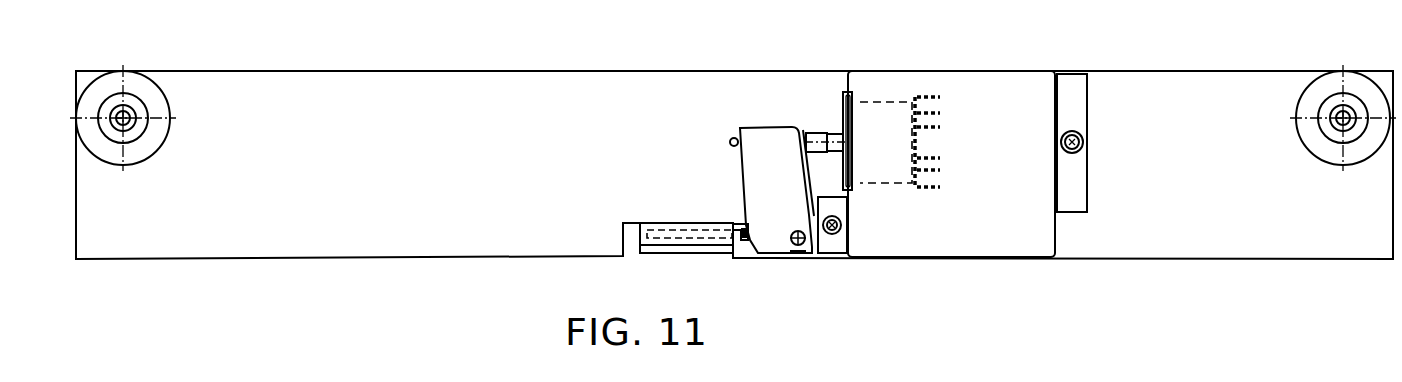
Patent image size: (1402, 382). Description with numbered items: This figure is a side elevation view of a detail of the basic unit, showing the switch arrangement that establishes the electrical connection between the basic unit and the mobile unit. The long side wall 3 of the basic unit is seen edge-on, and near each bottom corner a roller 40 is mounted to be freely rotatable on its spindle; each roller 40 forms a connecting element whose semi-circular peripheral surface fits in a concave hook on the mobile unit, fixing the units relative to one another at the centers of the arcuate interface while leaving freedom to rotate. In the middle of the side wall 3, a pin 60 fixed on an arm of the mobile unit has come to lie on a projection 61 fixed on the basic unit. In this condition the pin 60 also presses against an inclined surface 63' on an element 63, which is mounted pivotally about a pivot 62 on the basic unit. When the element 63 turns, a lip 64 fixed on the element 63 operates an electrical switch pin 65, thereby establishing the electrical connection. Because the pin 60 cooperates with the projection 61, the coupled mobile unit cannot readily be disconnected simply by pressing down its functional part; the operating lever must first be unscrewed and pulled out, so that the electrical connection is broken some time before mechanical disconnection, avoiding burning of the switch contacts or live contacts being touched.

The side wall 3 is at (514, 89).
The roller 40 is at (152, 138).
The pin 60 is at (673, 255).
The projection 61 is at (721, 248).
The pivot 62 is at (812, 255).
The element 63 is at (735, 190).
The inclined surface 63' is at (713, 213).
The lip 64 is at (803, 128).
The electrical switch pin 65 is at (930, 138).